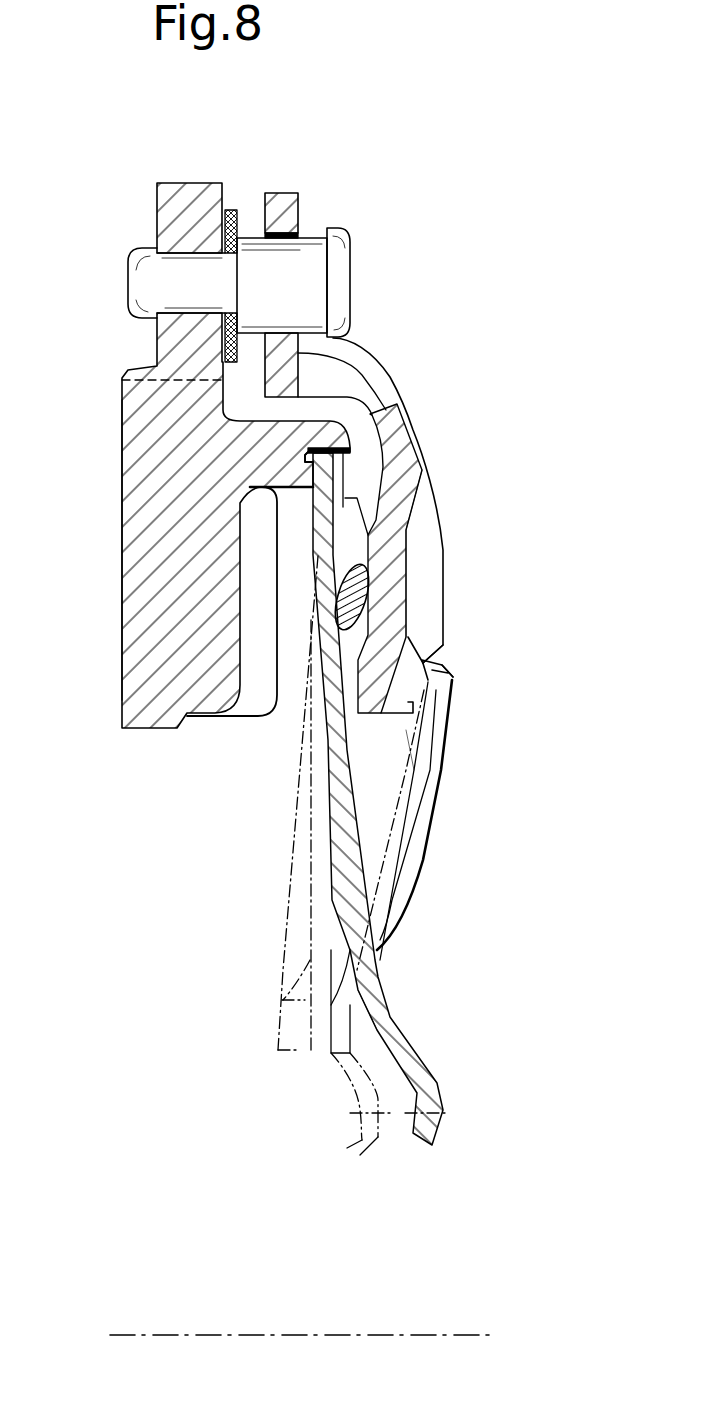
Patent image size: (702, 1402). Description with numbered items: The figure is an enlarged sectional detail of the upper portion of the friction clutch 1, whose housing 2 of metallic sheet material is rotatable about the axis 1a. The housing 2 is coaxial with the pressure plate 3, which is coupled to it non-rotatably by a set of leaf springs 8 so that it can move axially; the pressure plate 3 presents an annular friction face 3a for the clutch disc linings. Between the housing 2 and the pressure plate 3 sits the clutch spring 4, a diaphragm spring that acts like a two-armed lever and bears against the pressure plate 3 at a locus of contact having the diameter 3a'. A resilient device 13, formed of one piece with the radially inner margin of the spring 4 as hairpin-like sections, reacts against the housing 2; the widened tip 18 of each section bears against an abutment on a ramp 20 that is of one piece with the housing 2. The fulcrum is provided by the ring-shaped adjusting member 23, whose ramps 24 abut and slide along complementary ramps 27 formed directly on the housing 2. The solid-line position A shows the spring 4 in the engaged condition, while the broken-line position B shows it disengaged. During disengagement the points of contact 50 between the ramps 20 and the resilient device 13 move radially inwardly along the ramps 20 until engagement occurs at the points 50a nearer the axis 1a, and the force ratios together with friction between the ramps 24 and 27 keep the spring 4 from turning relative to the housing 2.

The friction clutch 1 is at (467, 250).
The axis 1a is at (452, 1333).
The housing 2 is at (386, 453).
The pressure plate 3 is at (122, 571).
The friction face 3a is at (86, 550).
The diameter of locus of contact 3a' is at (184, 425).
The clutch spring 4 is at (350, 808).
The leaf springs 8 is at (228, 210).
The resilient device 13 is at (405, 865).
The tip 18 is at (453, 677).
The ramps 20 is at (427, 662).
The adjusting member 23 is at (368, 565).
The ramps 24 is at (451, 565).
The complementary ramps 27 is at (373, 592).
The points of contact 50 is at (440, 657).
The points of contact 50a is at (398, 730).
The engaged position A is at (363, 988).
The disengaged position B is at (357, 1078).